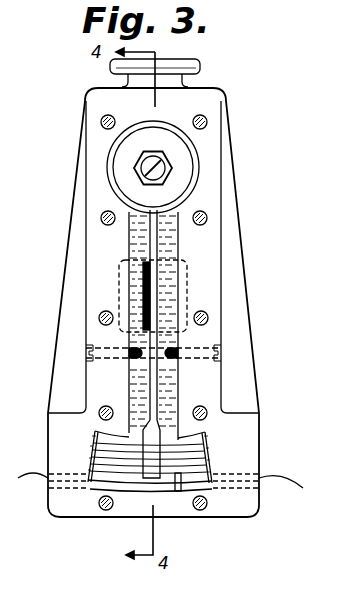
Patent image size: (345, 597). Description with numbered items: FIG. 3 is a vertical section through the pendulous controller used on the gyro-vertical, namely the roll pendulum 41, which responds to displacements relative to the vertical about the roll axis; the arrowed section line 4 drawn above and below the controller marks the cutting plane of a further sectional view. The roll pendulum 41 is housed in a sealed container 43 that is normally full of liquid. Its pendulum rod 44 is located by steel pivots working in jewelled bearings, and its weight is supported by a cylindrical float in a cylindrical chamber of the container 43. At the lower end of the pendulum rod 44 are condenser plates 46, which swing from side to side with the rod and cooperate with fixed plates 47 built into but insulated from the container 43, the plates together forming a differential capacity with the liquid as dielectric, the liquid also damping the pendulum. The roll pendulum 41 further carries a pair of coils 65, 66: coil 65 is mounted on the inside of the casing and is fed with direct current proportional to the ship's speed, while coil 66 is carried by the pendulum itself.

The dial boss with hexagonal nut 4 is at (171, 138).
The roll pendulum 41 is at (177, 255).
The sealed container 43 is at (95, 266).
The pendulum rod 44 is at (179, 391).
The condenser plates 46 is at (176, 491).
The fixed plates 47 is at (212, 469).
The coil 65 is at (118, 297).
The coil 66 is at (145, 265).